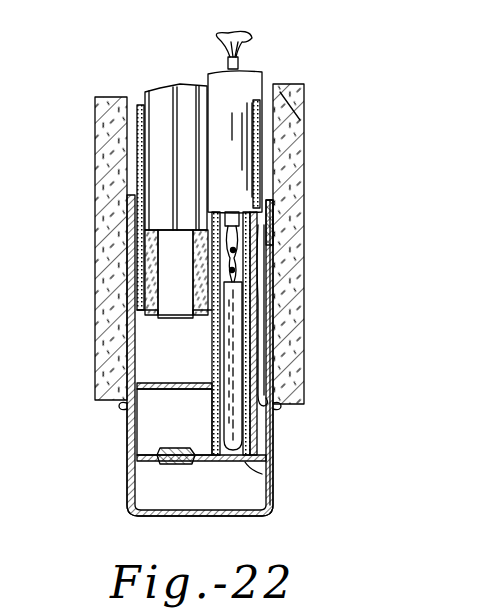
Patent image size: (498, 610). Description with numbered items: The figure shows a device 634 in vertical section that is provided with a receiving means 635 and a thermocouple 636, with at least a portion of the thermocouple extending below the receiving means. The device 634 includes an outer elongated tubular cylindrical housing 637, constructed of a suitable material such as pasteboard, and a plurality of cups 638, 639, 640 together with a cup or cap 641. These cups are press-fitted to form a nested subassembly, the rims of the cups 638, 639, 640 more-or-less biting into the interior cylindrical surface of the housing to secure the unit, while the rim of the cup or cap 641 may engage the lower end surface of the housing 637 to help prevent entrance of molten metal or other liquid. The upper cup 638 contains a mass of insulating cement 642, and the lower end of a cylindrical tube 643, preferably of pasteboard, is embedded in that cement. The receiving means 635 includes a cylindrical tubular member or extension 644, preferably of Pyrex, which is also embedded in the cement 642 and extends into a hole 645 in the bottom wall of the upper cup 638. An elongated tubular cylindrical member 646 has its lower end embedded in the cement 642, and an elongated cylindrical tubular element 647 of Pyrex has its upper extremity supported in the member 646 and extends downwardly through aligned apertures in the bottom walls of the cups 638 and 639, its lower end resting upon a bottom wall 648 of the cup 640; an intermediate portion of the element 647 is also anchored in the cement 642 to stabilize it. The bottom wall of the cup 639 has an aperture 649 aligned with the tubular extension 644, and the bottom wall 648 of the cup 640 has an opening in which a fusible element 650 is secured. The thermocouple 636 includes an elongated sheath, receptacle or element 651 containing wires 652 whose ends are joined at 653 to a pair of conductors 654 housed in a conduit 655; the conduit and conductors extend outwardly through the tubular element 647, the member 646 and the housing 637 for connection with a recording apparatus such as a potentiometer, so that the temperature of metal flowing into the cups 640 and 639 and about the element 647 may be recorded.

The device 634 is at (292, 86).
The receiving means 635 is at (160, 92).
The thermocouple 636 is at (268, 333).
The outer elongated tubular cylindrical housing 637 is at (300, 114).
The upper cup 638 is at (272, 216).
The cup 639 is at (274, 302).
The cup 640 is at (266, 433).
The cup or cap 641 is at (275, 499).
The insulating cement 642 is at (150, 252).
The cylindrical tube 643 is at (140, 129).
The cylindrical tubular member or extension 644 is at (160, 276).
The hole 645 is at (162, 312).
The elongated tubular cylindrical member 646 is at (243, 84).
The elongated cylindrical tubular element 647 is at (262, 380).
The bottom wall 648 is at (262, 474).
The aperture 649 is at (167, 393).
The fusible element 650 is at (160, 453).
The sheath, receptacle or element 651 is at (244, 352).
The wires 652 is at (224, 350).
The joint 653 is at (234, 270).
The conductors 654 is at (220, 36).
The conduit 655 is at (226, 65).